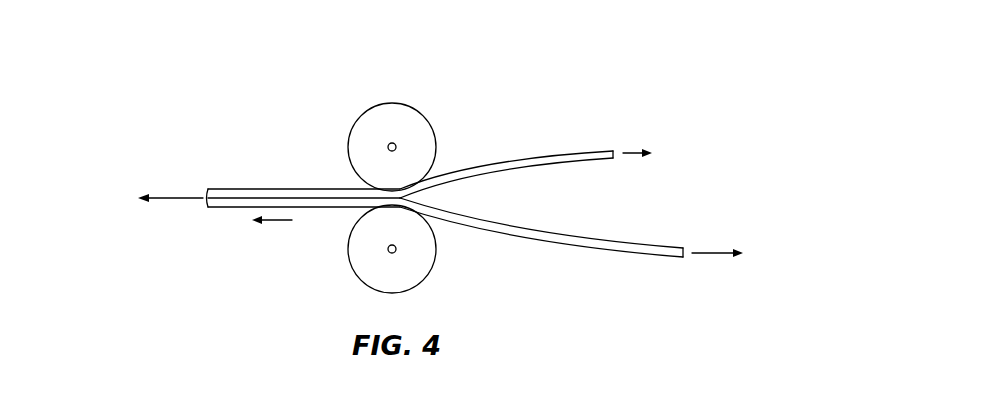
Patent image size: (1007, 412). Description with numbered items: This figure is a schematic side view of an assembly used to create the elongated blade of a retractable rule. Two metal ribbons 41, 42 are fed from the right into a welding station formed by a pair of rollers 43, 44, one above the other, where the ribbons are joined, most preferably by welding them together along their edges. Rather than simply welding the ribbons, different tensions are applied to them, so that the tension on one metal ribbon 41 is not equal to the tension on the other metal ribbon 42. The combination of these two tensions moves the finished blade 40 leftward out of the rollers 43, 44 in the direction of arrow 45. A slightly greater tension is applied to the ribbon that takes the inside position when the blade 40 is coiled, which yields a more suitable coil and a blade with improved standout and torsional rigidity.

The blade 40 is at (177, 117).
The metal ribbon 41 is at (498, 165).
The metal ribbon 42 is at (526, 233).
The roller 43 is at (349, 147).
The roller 44 is at (348, 250).
The arrow 45 is at (304, 218).